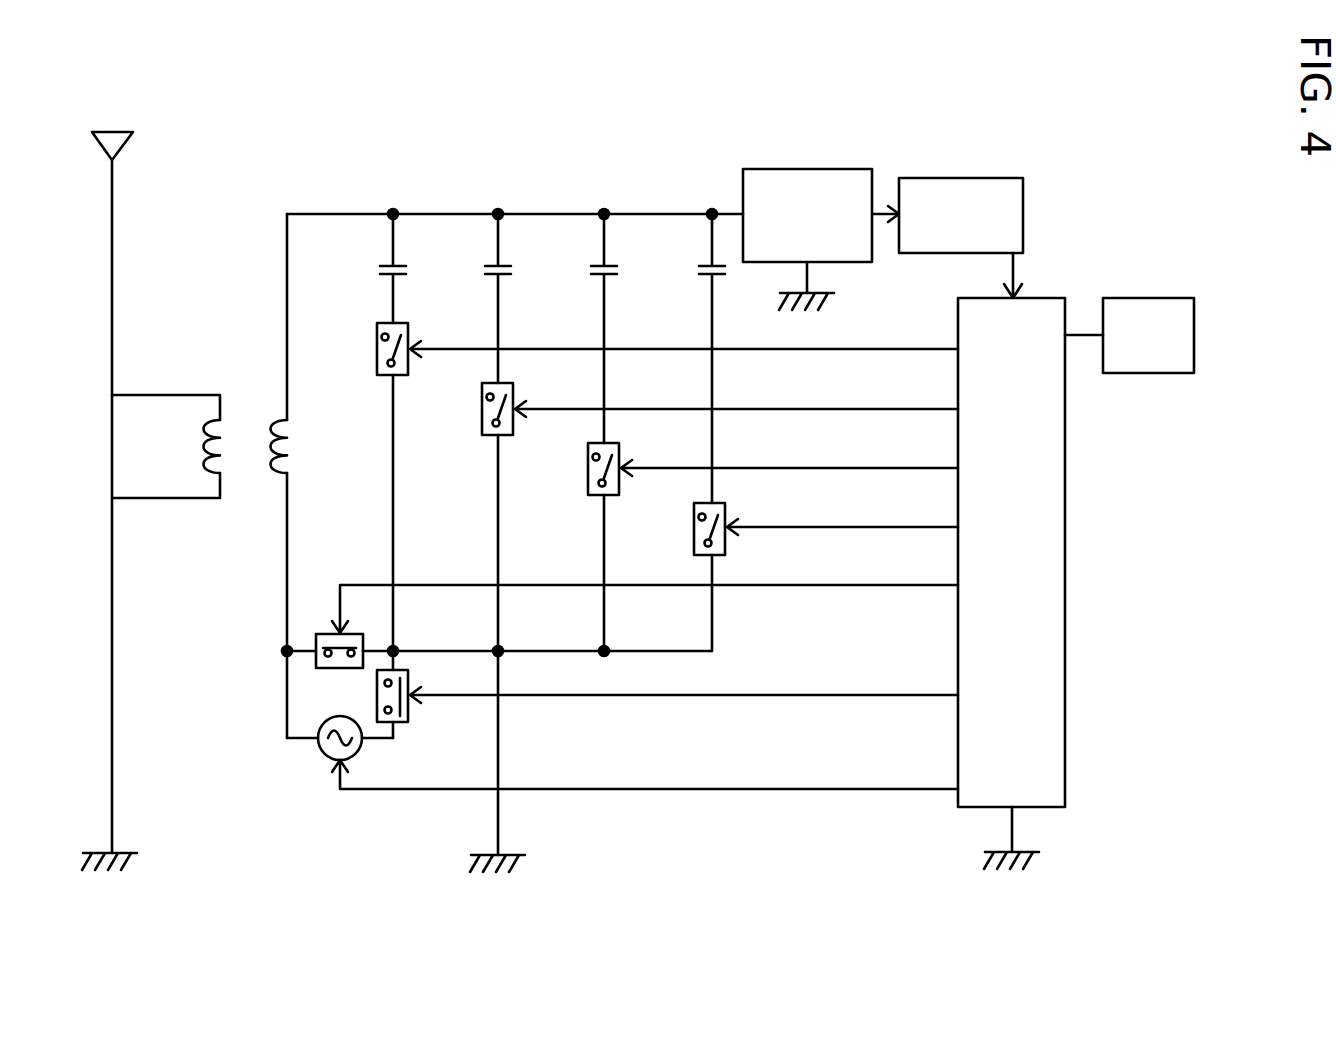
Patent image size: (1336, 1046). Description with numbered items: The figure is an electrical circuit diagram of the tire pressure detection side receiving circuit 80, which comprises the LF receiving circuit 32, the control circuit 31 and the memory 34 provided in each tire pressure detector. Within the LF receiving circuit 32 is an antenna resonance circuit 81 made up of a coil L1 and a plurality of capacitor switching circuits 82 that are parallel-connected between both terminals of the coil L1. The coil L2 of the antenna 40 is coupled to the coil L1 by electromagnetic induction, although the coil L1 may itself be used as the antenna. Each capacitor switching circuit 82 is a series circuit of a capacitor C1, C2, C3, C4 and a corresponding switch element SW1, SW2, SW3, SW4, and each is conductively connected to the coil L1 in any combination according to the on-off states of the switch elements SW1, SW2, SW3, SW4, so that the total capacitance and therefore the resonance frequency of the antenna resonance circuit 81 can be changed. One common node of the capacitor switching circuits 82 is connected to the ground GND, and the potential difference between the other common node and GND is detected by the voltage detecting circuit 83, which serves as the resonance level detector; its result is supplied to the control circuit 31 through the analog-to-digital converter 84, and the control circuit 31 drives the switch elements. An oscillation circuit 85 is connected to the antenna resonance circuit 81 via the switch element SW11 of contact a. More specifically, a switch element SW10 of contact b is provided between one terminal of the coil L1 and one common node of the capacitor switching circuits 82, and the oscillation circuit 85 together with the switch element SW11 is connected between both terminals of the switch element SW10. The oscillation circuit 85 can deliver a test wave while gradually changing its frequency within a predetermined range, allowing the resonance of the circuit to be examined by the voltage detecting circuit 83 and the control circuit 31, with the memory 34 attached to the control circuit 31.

The antenna 40 is at (130, 133).
The antenna resonance circuit 81 is at (363, 188).
The capacitor switching circuits 82 is at (518, 287).
The voltage detecting circuit 83 is at (791, 168).
The analog-to-digital converter 84 is at (961, 184).
The tire pressure detection side receiving circuit 80 is at (1000, 84).
The LF receiving circuit 32 is at (997, 165).
The control circuit 31 is at (1050, 298).
The memory 34 is at (1130, 298).
The oscillation circuit 85 is at (323, 752).
The capacitor C1 is at (378, 270).
The capacitor C2 is at (483, 270).
The capacitor C3 is at (589, 270).
The capacitor C4 is at (697, 270).
The switch element SW1 is at (375, 349).
The switch element SW2 is at (480, 419).
The switch element SW3 is at (586, 480).
The switch element SW4 is at (692, 538).
The switch element of contact b SW10 is at (315, 660).
The switch element of contact a SW11 is at (377, 695).
The coil L1 is at (265, 448).
The coil L2 is at (203, 445).
The ground GND is at (497, 880).